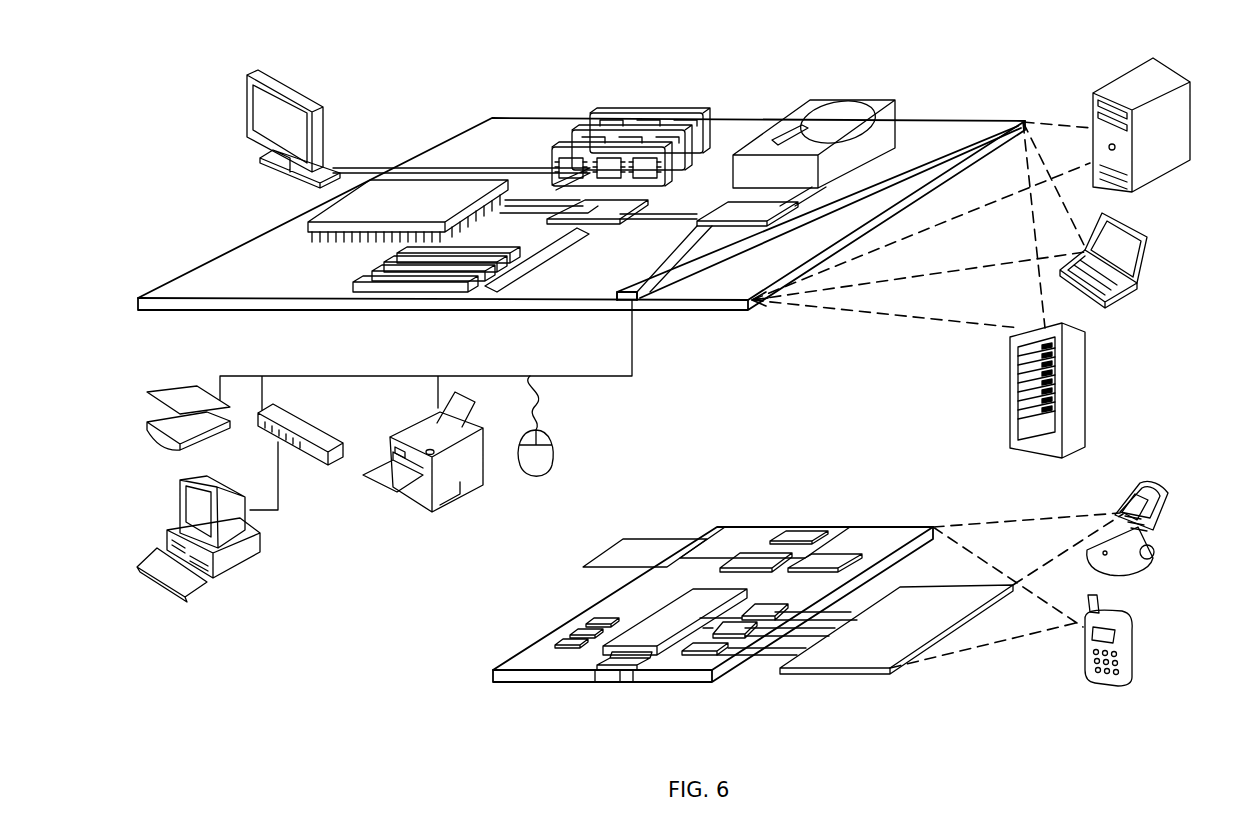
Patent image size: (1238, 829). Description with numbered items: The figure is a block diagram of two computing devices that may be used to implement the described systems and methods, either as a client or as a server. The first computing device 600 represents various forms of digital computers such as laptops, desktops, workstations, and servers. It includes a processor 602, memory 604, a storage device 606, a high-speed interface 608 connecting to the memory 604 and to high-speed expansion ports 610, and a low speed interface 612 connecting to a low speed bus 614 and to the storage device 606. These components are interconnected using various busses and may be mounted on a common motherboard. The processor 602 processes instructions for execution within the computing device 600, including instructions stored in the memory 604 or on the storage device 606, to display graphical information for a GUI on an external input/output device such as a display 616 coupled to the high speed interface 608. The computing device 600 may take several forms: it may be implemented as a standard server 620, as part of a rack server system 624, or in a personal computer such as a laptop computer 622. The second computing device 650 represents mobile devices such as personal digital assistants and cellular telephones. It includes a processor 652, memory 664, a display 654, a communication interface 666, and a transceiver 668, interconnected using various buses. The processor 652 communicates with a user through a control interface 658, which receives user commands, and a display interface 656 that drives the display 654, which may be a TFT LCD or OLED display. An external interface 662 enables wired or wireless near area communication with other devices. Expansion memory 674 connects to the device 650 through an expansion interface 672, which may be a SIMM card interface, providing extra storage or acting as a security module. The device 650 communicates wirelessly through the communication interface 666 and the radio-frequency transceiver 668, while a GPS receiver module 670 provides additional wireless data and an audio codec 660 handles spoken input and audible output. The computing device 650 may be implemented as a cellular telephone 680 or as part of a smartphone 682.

The computing device 600 is at (426, 97).
The processor 602 is at (308, 224).
The memory 604 is at (608, 113).
The storage device 606 is at (816, 100).
The high-speed interface 608 is at (575, 212).
The high-speed expansion ports 610 is at (355, 282).
The low speed interface 612 is at (733, 209).
The low speed bus 614 is at (640, 300).
The display 616 is at (252, 73).
The standard server 620 is at (1093, 100).
The laptop computer 622 is at (1148, 238).
The rack server system 624 is at (1010, 412).
The computing device 650 is at (480, 678).
The processor 652 is at (650, 640).
The display 654 is at (862, 657).
The display interface 656 is at (717, 655).
The control interface 658 is at (760, 630).
The audio codec 660 is at (765, 612).
The external interface 662 is at (618, 672).
The memory 664 is at (575, 634).
The communication interface 666 is at (756, 562).
The transceiver 668 is at (826, 560).
The GPS receiver module 670 is at (801, 535).
The expansion interface 672 is at (695, 540).
The expansion memory 674 is at (625, 542).
The cellular telephone 680 is at (1136, 486).
The smartphone 682 is at (1084, 646).